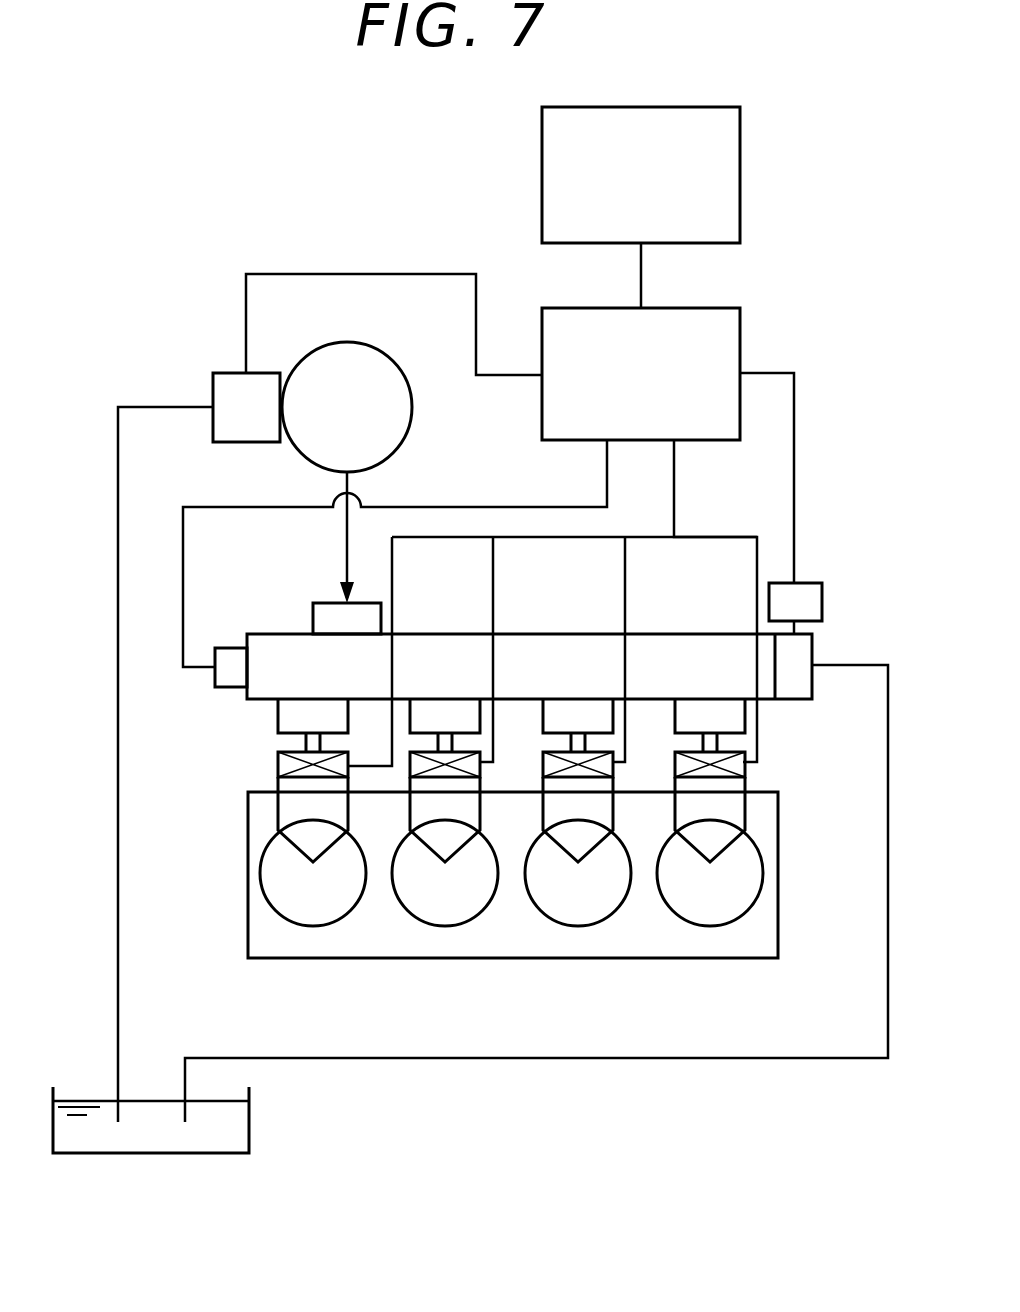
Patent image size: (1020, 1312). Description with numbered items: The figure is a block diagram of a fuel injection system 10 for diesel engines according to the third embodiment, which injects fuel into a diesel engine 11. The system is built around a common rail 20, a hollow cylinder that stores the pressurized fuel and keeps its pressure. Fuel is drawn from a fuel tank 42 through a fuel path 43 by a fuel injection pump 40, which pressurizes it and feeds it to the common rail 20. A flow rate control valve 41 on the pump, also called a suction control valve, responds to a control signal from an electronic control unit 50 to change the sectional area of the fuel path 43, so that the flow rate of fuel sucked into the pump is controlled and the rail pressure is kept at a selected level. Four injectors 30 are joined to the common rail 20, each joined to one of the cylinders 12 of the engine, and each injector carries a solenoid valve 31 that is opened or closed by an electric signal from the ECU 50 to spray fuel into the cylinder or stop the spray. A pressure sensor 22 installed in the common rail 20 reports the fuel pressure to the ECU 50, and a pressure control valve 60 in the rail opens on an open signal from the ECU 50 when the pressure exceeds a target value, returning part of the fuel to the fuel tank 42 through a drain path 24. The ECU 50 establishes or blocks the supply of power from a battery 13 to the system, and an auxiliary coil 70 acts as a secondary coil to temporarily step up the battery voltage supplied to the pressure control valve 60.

The fuel injection system 10 is at (750, 297).
The diesel engine 11 is at (778, 862).
The cylinder 12 is at (315, 926).
The battery 13 is at (742, 148).
The common rail 20 is at (470, 671).
The pressure sensor 22 is at (215, 685).
The drain path 24 is at (613, 1060).
The injector 30 is at (296, 845).
The solenoid valve 31 is at (277, 770).
The fuel injection pump 40 is at (354, 342).
The flow rate control valve 41 is at (226, 373).
The fuel tank 42 is at (149, 1155).
The fuel path 43 is at (117, 460).
The electronic control unit 50 is at (742, 335).
The pressure control valve 60 is at (812, 650).
The auxiliary coil 70 is at (822, 590).